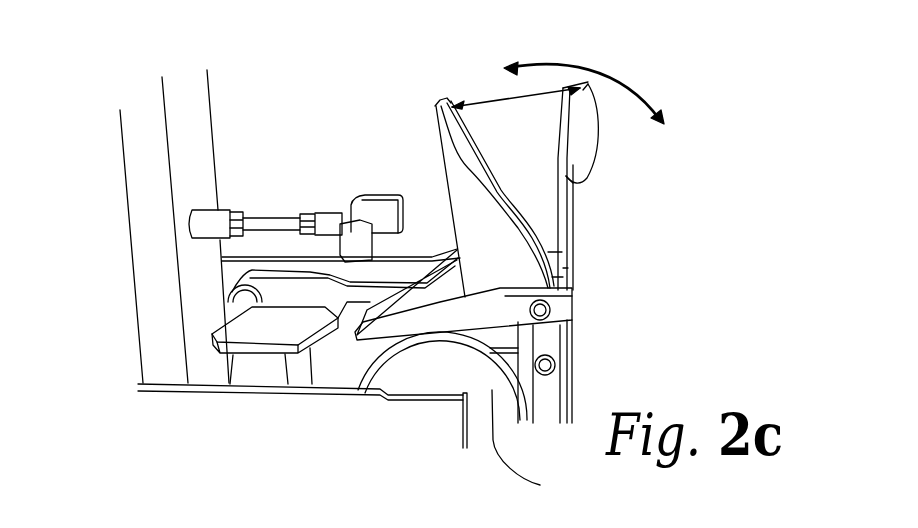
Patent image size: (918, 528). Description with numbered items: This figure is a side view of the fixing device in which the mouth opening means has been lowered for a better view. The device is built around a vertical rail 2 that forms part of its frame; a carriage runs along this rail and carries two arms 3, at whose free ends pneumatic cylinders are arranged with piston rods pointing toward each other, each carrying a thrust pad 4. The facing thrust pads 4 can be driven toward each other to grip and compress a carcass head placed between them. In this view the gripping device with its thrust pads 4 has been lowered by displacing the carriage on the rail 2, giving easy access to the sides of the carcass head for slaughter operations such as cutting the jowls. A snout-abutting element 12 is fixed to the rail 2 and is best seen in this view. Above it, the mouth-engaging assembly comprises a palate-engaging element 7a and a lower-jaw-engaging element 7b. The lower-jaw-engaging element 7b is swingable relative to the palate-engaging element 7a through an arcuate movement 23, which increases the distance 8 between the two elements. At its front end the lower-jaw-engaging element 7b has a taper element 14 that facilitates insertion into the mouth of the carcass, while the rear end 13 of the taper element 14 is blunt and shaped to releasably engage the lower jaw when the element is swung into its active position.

The vertical rail 2 is at (160, 188).
The arms 3 is at (381, 434).
The thrust pad 4 is at (448, 256).
The palate-engaging element 7a is at (447, 177).
The lower-jaw-engaging element 7b is at (567, 220).
The distance 8 is at (487, 98).
The snout-abutting element 12 is at (385, 212).
The rear end 13 is at (577, 183).
The taper element 14 is at (589, 100).
The arcuate movement 23 is at (620, 80).